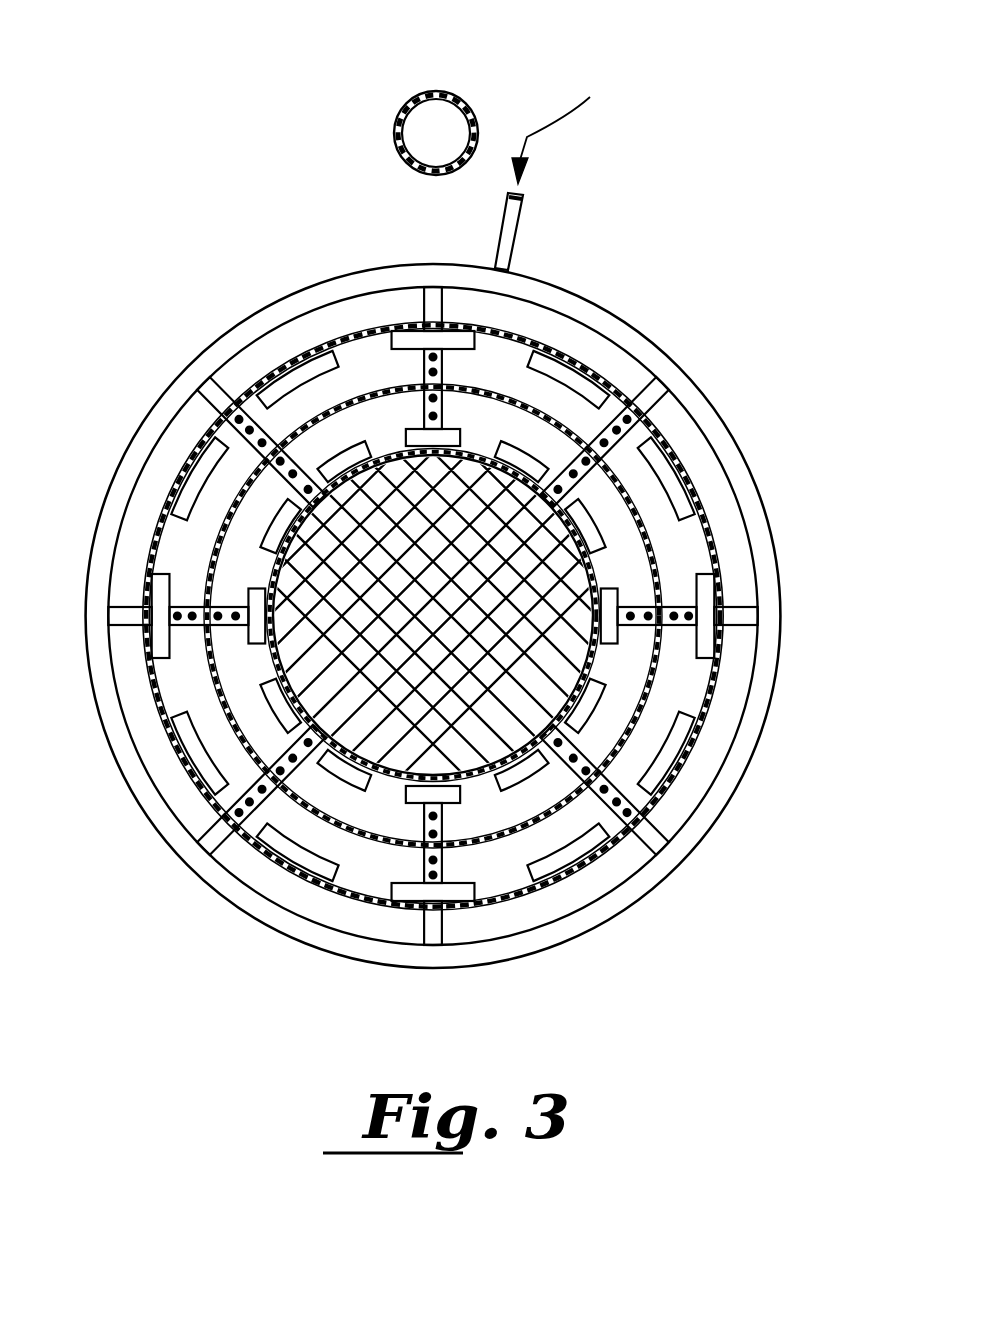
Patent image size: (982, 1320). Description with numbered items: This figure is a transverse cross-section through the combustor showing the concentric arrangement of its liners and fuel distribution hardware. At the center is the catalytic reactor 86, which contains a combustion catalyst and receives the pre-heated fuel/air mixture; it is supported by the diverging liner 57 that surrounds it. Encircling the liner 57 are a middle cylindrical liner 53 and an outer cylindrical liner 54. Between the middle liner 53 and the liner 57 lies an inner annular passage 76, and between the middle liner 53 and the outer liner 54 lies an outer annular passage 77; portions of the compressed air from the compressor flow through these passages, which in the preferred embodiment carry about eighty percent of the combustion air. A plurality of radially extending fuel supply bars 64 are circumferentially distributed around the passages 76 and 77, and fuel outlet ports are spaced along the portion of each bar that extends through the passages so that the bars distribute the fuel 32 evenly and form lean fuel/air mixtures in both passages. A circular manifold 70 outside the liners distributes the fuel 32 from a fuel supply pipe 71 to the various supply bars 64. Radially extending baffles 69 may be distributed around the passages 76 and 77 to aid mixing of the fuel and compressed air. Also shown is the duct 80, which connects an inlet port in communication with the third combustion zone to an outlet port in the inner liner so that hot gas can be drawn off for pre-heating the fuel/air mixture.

The fuel 32 is at (570, 120).
The middle cylindrical liner 53 is at (667, 552).
The outer cylindrical liner 54 is at (683, 463).
The diverging liner 57 is at (274, 658).
The fuel supply bars 64 is at (653, 404).
The baffles 69 is at (505, 691).
The circular manifold 70 is at (620, 323).
The fuel supply pipe 71 is at (520, 222).
The inner annular passage 76 is at (505, 438).
The outer annular passage 77 is at (522, 381).
The duct 80 is at (404, 100).
The catalytic reactor 86 is at (454, 636).